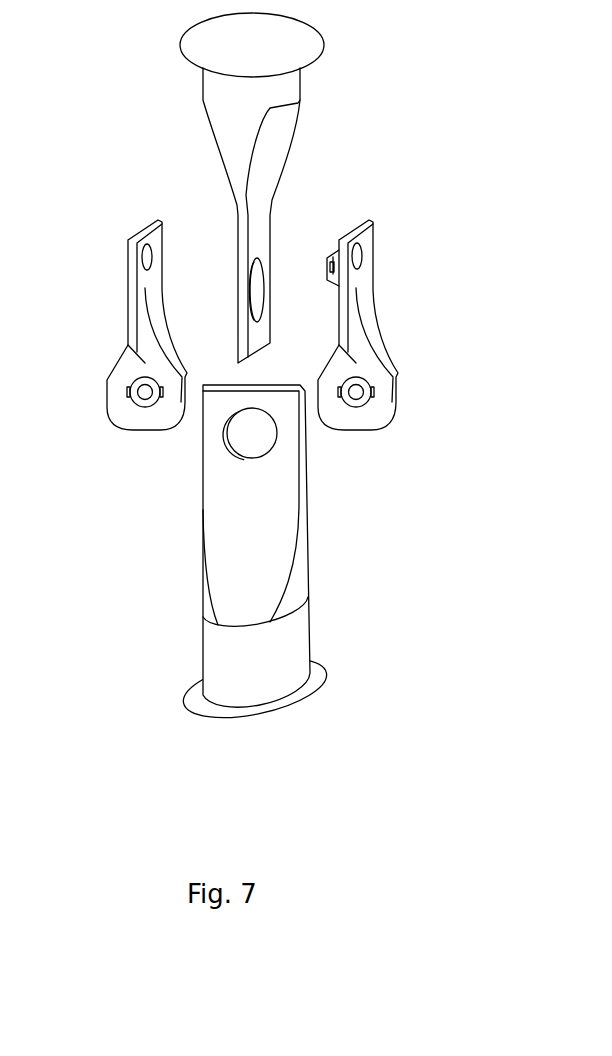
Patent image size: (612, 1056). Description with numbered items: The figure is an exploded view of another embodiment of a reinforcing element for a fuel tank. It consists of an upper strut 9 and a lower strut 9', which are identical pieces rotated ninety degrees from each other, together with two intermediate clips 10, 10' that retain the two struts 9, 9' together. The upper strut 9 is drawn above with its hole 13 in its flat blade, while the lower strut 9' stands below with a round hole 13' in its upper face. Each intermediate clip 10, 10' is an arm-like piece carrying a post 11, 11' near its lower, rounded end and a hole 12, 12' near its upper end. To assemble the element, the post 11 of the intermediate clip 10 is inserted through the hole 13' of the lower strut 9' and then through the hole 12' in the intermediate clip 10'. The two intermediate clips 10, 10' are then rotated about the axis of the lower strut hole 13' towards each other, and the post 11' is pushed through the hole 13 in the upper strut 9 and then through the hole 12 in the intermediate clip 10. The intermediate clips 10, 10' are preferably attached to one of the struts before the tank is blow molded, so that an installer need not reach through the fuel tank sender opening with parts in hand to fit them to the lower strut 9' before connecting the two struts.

The upper strut 9 is at (218, 188).
The lower strut 9' is at (222, 557).
The intermediate clip 10 is at (116, 325).
The intermediate clip 10' is at (396, 325).
The post 11 is at (105, 435).
The post 11' is at (332, 304).
The hole 12 is at (179, 235).
The hole 12' is at (404, 358).
The hole 13 is at (284, 311).
The hole 13' is at (310, 477).